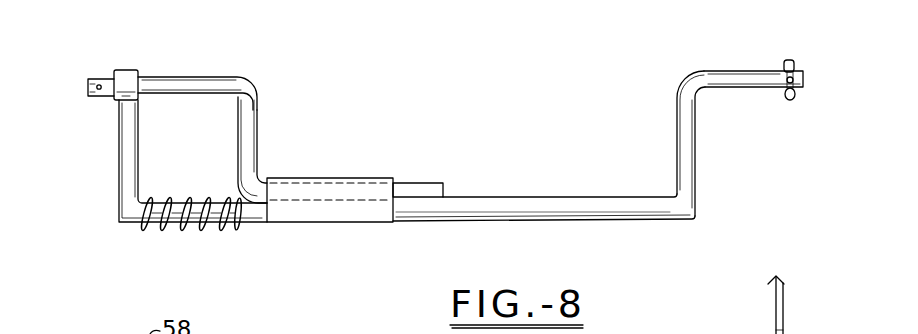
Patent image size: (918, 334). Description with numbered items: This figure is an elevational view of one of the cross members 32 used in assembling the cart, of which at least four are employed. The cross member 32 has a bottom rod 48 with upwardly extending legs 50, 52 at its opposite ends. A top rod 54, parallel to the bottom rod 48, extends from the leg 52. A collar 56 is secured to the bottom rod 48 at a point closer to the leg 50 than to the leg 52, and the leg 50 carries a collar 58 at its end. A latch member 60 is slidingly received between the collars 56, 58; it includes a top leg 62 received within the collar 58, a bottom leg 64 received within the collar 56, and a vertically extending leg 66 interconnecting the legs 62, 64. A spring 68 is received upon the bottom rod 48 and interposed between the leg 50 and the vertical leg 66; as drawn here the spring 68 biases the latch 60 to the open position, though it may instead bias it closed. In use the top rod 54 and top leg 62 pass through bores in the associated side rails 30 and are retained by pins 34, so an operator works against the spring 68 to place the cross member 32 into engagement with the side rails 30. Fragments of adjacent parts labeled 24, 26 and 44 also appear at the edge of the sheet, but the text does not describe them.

The cross member 32 is at (541, 120).
The pin 34 is at (787, 60).
The bottom rod 48 is at (557, 199).
The upwardly extending leg 50 is at (121, 154).
The upwardly extending leg 52 is at (694, 151).
The top rod 54 is at (761, 87).
The collar 56 is at (362, 178).
The collar 58 is at (126, 70).
The latch member 60 is at (236, 80).
The top leg 62 is at (180, 77).
The bottom leg 64 is at (428, 183).
The vertically extending leg 66 is at (259, 133).
The spring 68 is at (187, 228).
The side rail 30 is at (92, 333).
The rail 24 is at (773, 305).
The rail 26 is at (776, 305).
The support 44 is at (799, 332).